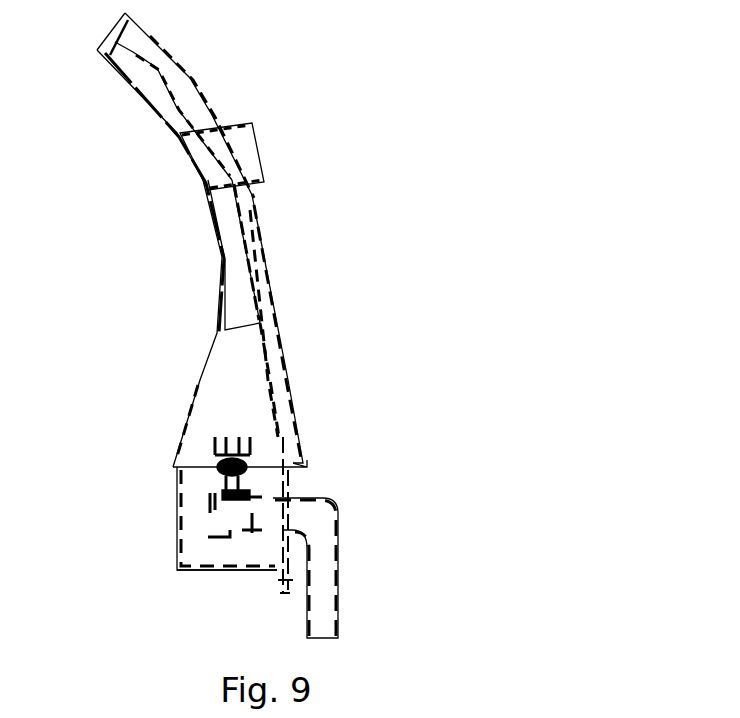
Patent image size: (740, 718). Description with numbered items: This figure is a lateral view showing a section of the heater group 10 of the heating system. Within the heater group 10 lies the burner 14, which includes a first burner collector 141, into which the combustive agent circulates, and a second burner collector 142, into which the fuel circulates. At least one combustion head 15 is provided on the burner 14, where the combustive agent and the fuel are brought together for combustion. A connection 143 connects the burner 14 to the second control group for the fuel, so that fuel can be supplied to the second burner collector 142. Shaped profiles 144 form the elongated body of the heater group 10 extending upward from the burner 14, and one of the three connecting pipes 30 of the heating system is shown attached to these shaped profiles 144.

The heater group 10 is at (157, 253).
The connecting pipe 30 is at (258, 140).
The shaped profiles 144 is at (238, 260).
The combustion head 15 is at (220, 433).
The first burner collector 141 is at (177, 523).
The second burner collector 142 is at (232, 514).
The burner 14 is at (203, 572).
The connection 143 is at (333, 498).